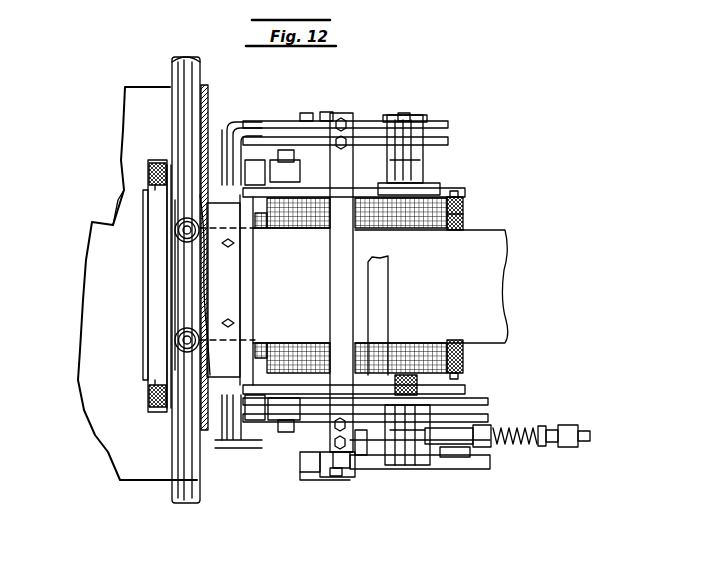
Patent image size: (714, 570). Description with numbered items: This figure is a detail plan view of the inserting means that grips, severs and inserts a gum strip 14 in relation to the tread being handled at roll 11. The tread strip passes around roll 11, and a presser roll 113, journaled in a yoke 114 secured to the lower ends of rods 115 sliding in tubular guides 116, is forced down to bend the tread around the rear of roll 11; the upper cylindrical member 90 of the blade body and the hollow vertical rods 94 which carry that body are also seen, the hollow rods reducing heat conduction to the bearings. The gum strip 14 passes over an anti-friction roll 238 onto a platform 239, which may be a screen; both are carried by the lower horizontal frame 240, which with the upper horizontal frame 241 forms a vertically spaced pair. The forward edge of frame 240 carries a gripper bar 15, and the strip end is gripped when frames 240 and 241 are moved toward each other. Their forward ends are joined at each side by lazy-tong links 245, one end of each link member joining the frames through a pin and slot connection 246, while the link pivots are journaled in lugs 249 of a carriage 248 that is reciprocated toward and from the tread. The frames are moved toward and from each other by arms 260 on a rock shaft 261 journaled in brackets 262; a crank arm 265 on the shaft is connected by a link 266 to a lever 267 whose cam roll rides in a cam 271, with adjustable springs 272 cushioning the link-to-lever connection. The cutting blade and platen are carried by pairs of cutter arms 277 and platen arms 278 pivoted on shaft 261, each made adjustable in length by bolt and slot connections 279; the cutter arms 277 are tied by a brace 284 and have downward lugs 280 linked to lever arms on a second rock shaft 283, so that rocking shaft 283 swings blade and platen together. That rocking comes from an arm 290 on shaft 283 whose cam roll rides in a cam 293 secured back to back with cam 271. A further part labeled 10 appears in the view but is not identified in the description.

The housing wall 10 is at (113, 432).
The roll 11 is at (182, 496).
The gum strip 14 is at (488, 291).
The gripper bar 15 is at (220, 286).
The upper cylindrical member 90 is at (178, 262).
The vertical rods 94 is at (175, 232).
The presser roll 113 is at (145, 198).
The yoke 114 is at (160, 308).
The rods 115 is at (152, 180).
The tubular guides 116 is at (152, 172).
The anti-friction roll 238 is at (463, 200).
The platform 239 is at (463, 217).
The lower horizontal frame 240 is at (283, 383).
The upper horizontal frame 241 is at (425, 185).
The lazy-tong links 245 is at (258, 160).
The pin and slot connection 246 is at (415, 385).
The carriage 248 is at (318, 160).
The lugs 249 is at (285, 160).
The arms 260 is at (435, 183).
The rock shaft 261 is at (405, 470).
The brackets 262 is at (405, 165).
The crank arm 265 is at (392, 470).
The link 266 is at (470, 445).
The lever 267 is at (540, 428).
The cam 271 is at (505, 446).
The adjustable springs 272 is at (497, 447).
The cutter arms 277 is at (227, 135).
The platen arms 278 is at (225, 135).
The bolt and slot connections 279 is at (305, 113).
The lugs 280 is at (335, 113).
The rock shaft 283 is at (335, 477).
The brace 284 is at (375, 258).
The arm 290 is at (312, 478).
The cam 293 is at (448, 465).